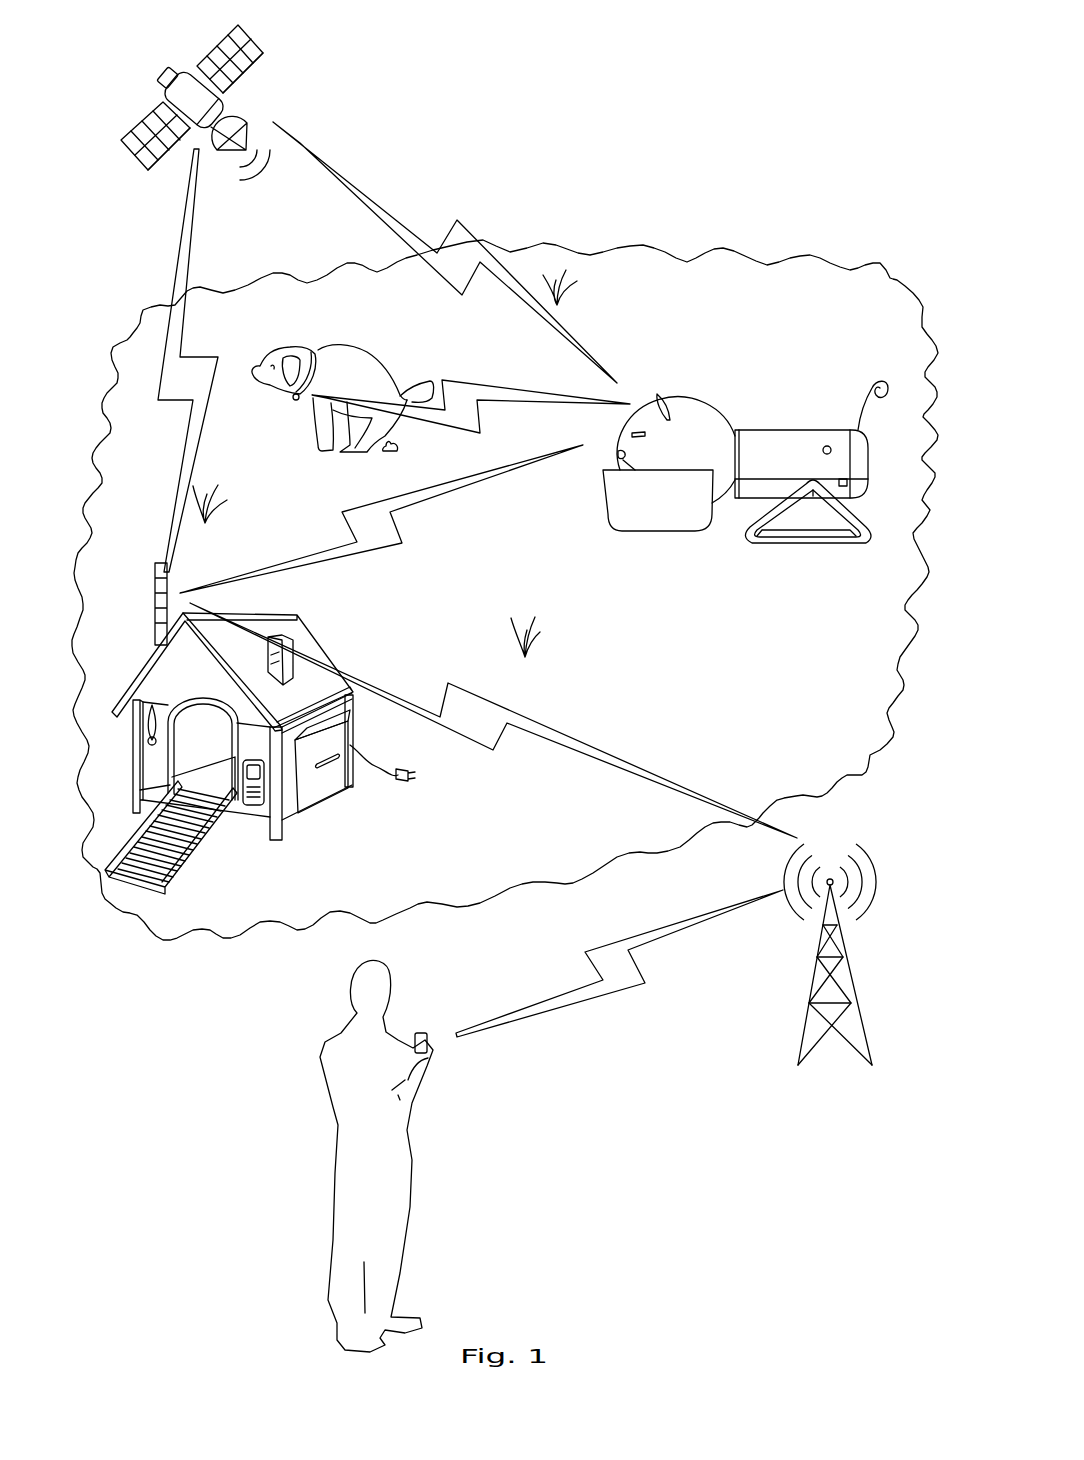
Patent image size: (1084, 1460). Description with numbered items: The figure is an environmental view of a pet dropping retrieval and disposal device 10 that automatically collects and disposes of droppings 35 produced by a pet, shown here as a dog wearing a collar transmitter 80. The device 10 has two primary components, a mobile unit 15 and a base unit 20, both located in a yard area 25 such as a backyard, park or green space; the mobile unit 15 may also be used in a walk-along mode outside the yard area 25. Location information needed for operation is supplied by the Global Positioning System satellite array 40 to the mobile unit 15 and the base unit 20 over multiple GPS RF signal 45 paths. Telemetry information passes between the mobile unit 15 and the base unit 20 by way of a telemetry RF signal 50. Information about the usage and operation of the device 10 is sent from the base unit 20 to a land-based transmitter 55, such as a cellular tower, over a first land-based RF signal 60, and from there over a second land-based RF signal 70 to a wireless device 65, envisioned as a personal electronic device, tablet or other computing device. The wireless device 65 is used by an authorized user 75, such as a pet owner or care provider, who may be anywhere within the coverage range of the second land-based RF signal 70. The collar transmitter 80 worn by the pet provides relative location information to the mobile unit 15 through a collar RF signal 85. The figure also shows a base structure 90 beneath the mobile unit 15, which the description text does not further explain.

The pet dropping retrieval and disposal device 10 is at (140, 1186).
The mobile unit 15 is at (745, 394).
The base unit 20 is at (237, 703).
The yard area 25 is at (700, 280).
The droppings 35 is at (402, 450).
The Global Positioning System satellite array 40 is at (245, 122).
The GPS RF signal 45 is at (183, 248).
The telemetry RF signal 50 is at (392, 512).
The land-based transmitter 55 is at (836, 952).
The first land-based RF signal 60 is at (488, 748).
The wireless device 65 is at (433, 1045).
The second land-based RF signal 70 is at (630, 952).
The authorized user 75 is at (442, 1156).
The collar transmitter 80 is at (335, 411).
The collar RF signal 85 is at (465, 397).
The robot charging base 90 is at (815, 527).